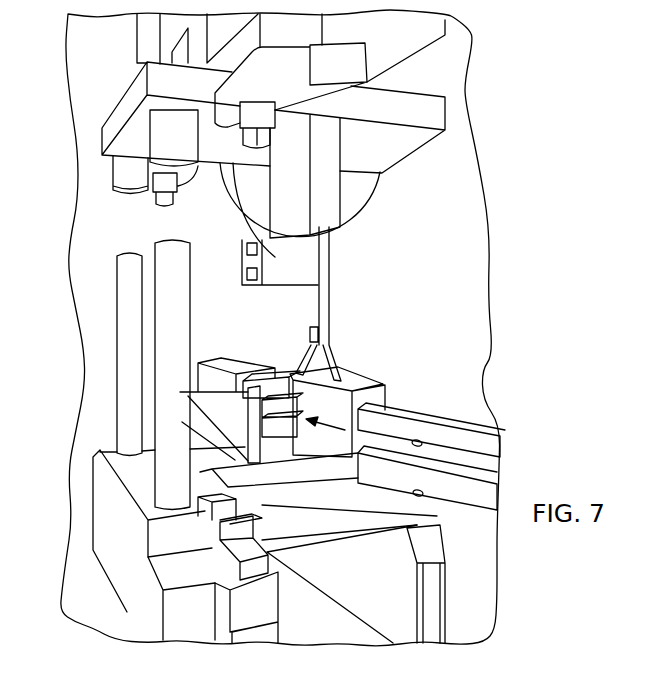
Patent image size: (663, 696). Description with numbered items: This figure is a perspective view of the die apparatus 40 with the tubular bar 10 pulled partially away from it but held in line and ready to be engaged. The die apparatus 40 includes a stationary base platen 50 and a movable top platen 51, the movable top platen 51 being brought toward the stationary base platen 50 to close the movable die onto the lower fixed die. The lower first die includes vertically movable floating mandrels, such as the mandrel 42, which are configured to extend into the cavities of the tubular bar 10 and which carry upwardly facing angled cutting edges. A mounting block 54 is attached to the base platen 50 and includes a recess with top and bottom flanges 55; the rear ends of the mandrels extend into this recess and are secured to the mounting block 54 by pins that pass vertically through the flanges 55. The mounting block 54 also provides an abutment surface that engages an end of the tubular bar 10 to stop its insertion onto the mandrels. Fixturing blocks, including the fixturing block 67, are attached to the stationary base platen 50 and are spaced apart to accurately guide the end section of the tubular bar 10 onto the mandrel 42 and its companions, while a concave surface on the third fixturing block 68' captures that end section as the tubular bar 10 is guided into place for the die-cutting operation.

The tubular bar 10 is at (407, 410).
The die apparatus 40 is at (478, 157).
The mandrel 42 is at (317, 333).
The stationary base platen 50 is at (127, 502).
The movable top platen 51 is at (122, 115).
The mounting block 54 is at (242, 360).
The top and bottom flanges 55 is at (277, 378).
The fixturing block 67 is at (100, 450).
The third fixturing block 68' is at (354, 391).